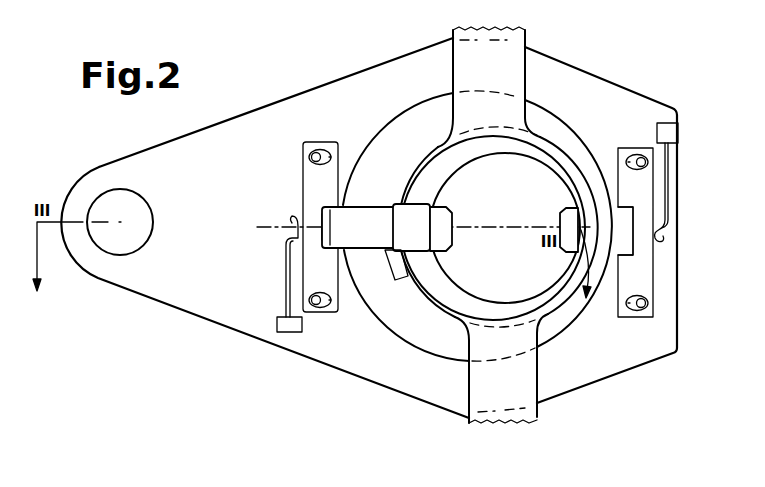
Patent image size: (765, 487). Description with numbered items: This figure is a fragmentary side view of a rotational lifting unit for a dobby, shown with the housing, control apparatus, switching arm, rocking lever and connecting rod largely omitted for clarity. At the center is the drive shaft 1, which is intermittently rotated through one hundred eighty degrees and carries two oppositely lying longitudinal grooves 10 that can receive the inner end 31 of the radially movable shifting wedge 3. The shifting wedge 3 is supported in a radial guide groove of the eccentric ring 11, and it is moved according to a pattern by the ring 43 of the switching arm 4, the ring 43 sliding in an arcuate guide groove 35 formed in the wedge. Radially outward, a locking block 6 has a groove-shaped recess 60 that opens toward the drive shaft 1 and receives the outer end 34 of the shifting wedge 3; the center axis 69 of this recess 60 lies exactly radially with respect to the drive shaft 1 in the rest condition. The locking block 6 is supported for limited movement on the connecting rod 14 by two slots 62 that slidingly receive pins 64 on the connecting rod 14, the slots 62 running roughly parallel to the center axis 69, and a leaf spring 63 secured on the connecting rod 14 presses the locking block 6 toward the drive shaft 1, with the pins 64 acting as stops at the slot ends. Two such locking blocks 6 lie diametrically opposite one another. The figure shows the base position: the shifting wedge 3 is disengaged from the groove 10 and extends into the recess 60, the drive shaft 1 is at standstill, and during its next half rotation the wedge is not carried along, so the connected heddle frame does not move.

The drive shaft 1 is at (547, 188).
The shifting wedge 3 is at (367, 215).
The switching arm 4 is at (515, 68).
The locking block 6 is at (315, 168).
The longitudinal groove 10 is at (568, 230).
The eccentric ring 11 is at (447, 343).
The connecting rod 14 is at (135, 168).
The inner end of the shifting wedge 31 is at (423, 217).
The outer end of the shifting wedge 34 is at (328, 210).
The arcuate guide groove 35 is at (400, 280).
The ring 43 is at (563, 297).
The recess 60 is at (320, 222).
The slot 62 is at (333, 147).
The leaf spring 63 is at (287, 265).
The pin 64 is at (312, 148).
The center axis of the recess 69 is at (268, 222).